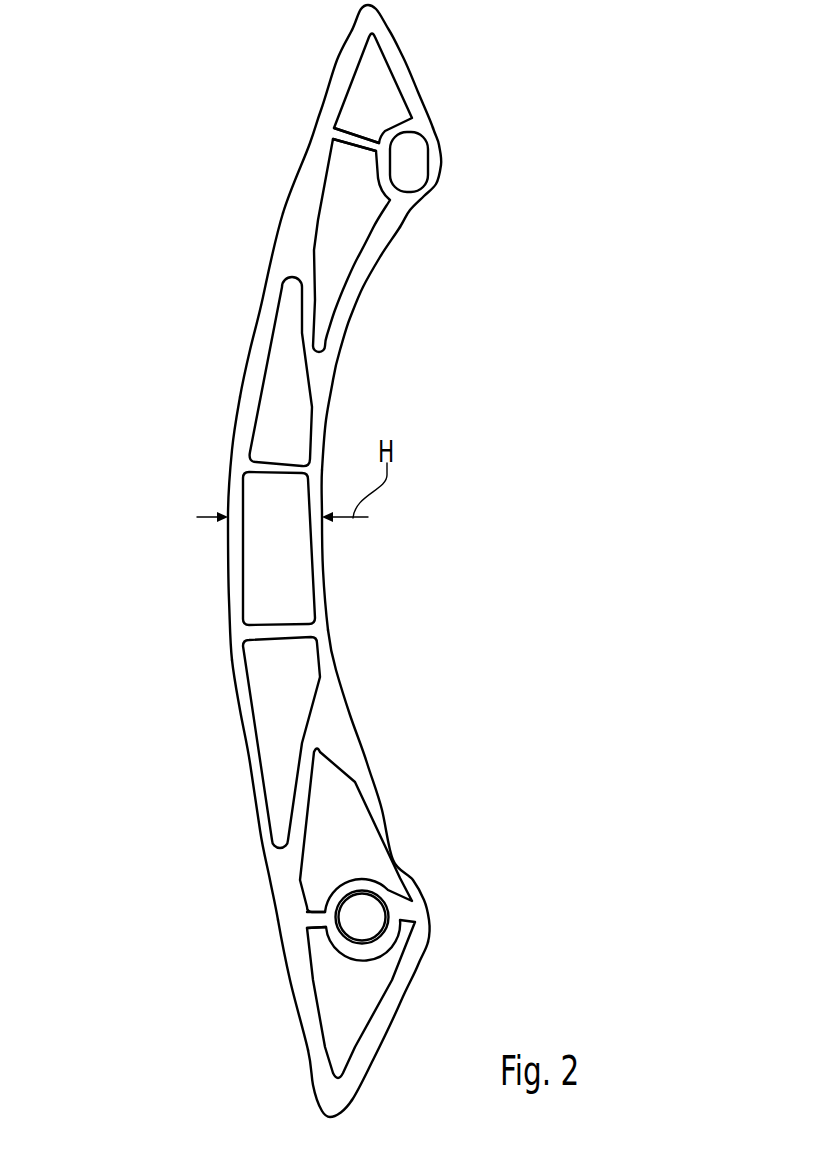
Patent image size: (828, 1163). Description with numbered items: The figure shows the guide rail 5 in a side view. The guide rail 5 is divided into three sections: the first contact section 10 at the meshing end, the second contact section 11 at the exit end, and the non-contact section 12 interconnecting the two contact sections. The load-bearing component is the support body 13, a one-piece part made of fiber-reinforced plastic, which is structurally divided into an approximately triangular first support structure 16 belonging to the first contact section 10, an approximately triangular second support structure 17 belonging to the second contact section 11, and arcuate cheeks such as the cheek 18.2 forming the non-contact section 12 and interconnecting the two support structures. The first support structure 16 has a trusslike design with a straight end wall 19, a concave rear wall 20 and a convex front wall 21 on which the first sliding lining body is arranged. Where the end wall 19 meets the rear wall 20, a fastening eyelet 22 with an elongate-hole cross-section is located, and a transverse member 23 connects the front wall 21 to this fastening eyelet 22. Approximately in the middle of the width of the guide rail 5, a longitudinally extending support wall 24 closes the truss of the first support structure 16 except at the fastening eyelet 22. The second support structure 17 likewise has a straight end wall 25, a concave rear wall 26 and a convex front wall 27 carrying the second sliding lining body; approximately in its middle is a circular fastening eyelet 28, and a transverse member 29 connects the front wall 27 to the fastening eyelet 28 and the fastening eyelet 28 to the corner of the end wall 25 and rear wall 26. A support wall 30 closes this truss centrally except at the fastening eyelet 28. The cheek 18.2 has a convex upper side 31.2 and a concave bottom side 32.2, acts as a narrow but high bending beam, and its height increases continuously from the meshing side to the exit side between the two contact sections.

The guide rail 5 is at (287, 561).
The first contact section 10 is at (318, 561).
The second contact section 11 is at (273, 1049).
The non-contact section 12 is at (222, 528).
The support body 13 is at (344, 745).
The first support structure 16 is at (367, 245).
The second support structure 17 is at (423, 877).
The cheek 18.2 is at (226, 339).
The end wall 19 is at (411, 66).
The rear wall 20 is at (378, 348).
The front wall 21 is at (302, 121).
The fastening eyelet 22 is at (448, 177).
The transverse member 23 is at (301, 151).
The support wall 24 is at (412, 89).
The end wall 25 is at (399, 1021).
The rear wall 26 is at (383, 831).
The front wall 27 is at (261, 1004).
The fastening eyelet 28 is at (408, 948).
The transverse member 29 is at (265, 902).
The support wall 30 is at (380, 999).
The convex upper side 31.2 is at (206, 790).
The concave bottom side 32.2 is at (388, 550).